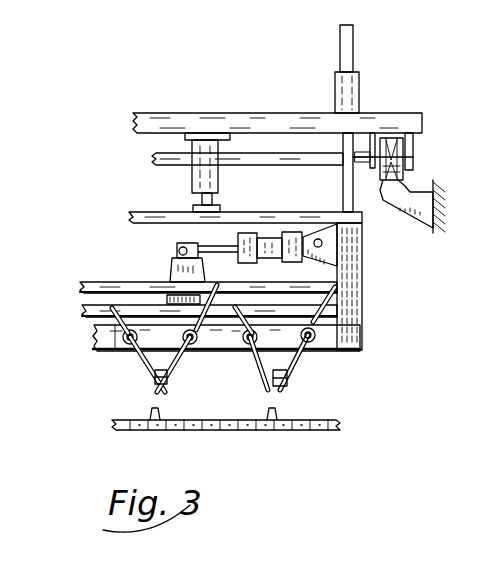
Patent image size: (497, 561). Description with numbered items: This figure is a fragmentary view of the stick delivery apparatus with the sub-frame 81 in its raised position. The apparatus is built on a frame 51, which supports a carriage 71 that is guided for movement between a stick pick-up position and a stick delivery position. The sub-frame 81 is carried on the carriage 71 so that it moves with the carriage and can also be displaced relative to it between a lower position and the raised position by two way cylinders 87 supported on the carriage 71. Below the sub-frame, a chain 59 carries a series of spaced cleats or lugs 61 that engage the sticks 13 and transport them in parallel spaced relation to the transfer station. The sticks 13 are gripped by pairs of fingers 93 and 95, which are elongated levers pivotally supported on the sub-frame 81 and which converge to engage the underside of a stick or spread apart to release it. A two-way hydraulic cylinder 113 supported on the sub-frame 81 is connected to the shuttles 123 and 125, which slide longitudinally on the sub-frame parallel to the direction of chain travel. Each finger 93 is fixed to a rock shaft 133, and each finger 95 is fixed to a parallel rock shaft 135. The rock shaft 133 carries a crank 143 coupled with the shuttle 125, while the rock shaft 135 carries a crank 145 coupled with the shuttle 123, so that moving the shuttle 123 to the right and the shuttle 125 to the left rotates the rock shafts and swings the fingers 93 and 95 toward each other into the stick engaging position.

The stick 13 is at (155, 374).
The frame 51 is at (415, 192).
The chain 59 is at (243, 427).
The lug 61 is at (148, 413).
The carriage 71 is at (335, 90).
The sub-frame 81 is at (341, 46).
The two way cylinder 87 is at (200, 179).
The finger 93 is at (182, 317).
The finger 95 is at (177, 372).
The two-way hydraulic cylinder 113 is at (263, 236).
The shuttle 123 is at (118, 290).
The shuttle 125 is at (82, 309).
The rock shaft 133 is at (132, 334).
The rock shaft 135 is at (316, 335).
The crank 143 is at (115, 350).
The crank 145 is at (325, 307).